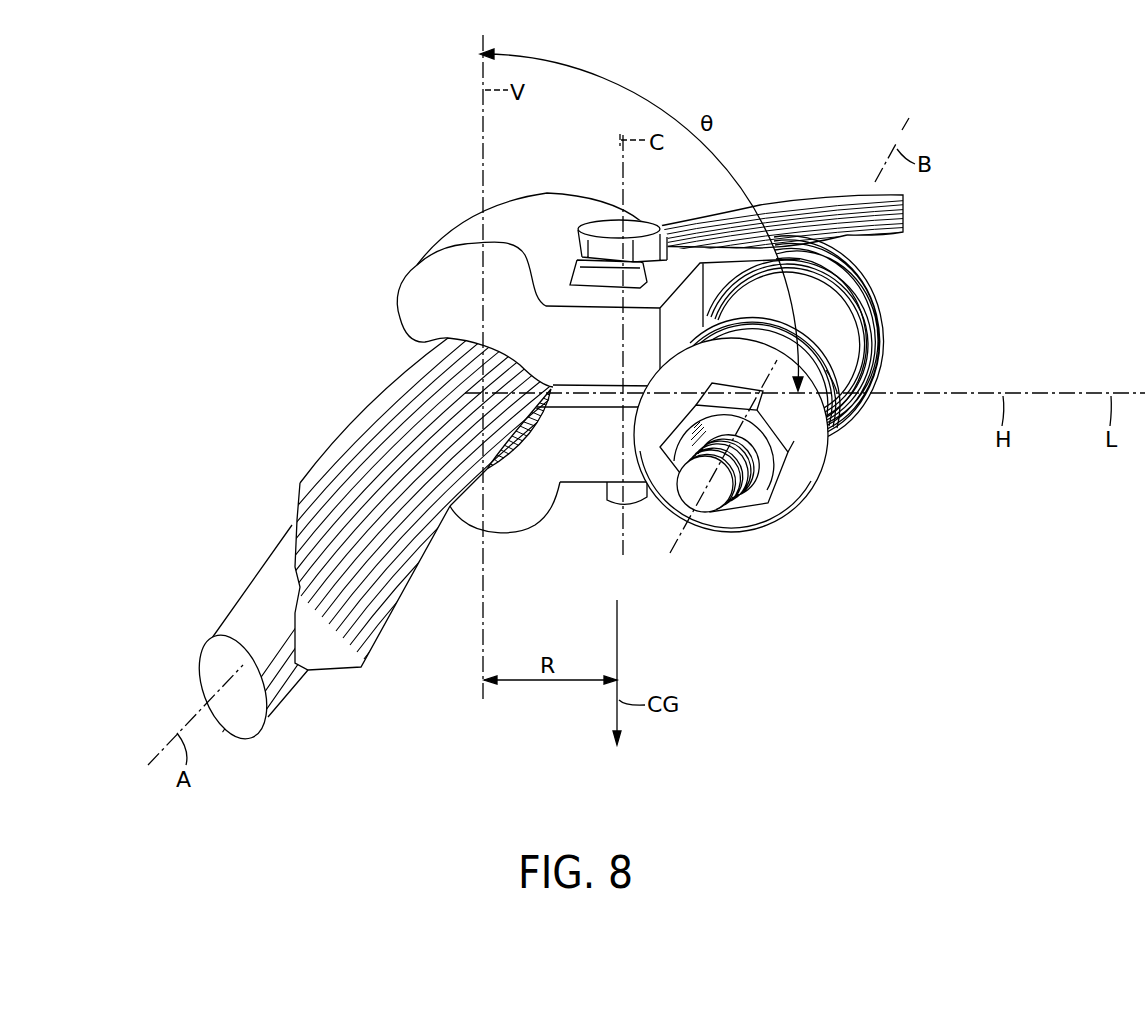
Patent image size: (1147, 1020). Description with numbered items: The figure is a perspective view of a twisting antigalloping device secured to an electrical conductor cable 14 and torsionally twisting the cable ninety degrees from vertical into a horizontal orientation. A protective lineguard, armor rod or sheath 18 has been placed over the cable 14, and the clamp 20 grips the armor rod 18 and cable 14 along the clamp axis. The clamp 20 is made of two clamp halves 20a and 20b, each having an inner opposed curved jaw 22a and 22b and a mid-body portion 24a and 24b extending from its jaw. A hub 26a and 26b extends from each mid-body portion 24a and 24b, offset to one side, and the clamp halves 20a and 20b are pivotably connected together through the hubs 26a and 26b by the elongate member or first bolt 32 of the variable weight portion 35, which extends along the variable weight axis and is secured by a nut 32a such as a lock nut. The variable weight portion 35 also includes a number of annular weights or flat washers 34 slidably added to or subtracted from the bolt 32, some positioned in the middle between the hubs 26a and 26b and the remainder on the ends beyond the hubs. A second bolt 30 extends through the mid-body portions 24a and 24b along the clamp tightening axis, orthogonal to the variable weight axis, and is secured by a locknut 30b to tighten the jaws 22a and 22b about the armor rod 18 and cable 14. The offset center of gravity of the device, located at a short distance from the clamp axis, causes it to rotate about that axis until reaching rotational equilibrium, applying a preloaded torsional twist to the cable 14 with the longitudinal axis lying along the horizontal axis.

The cable 14 is at (238, 606).
The armor rod 18 is at (323, 458).
The clamp 20 is at (512, 250).
The clamp half 20a is at (472, 240).
The clamp half 20b is at (468, 522).
The jaw 22a is at (407, 323).
The jaw 22b is at (515, 447).
The mid-body portion 24a is at (610, 362).
The mid-body portion 24b is at (614, 450).
The hub 26a is at (802, 250).
The hub 26b is at (837, 382).
The second bolt 30 is at (640, 221).
The locknut 30b is at (620, 497).
The elongate member 32 is at (710, 504).
The nut 32a is at (754, 508).
The flat washers 34 is at (883, 297).
The variable weight portion 35 is at (785, 505).